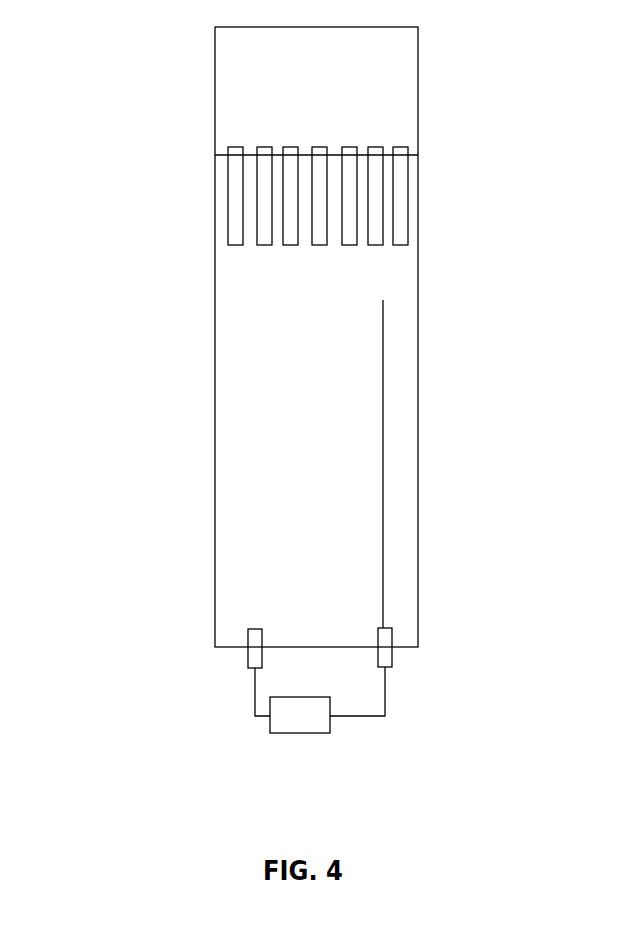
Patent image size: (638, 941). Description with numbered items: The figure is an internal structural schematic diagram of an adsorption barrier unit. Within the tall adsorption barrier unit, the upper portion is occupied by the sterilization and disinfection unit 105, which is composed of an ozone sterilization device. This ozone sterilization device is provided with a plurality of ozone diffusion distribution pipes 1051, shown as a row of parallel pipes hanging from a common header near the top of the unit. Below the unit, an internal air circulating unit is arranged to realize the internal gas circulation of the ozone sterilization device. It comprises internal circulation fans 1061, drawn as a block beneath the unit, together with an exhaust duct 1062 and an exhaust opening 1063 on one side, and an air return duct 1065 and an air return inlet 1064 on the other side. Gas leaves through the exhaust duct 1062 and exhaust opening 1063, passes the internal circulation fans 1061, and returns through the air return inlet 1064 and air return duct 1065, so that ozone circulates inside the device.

The sterilization and disinfection unit 105 is at (308, 337).
The ozone diffusion distribution pipes 1051 is at (408, 201).
The internal circulation fans 1061 is at (297, 733).
The exhaust duct 1062 is at (247, 656).
The exhaust opening 1063 is at (251, 672).
The air return inlet 1064 is at (392, 667).
The air return duct 1065 is at (384, 650).